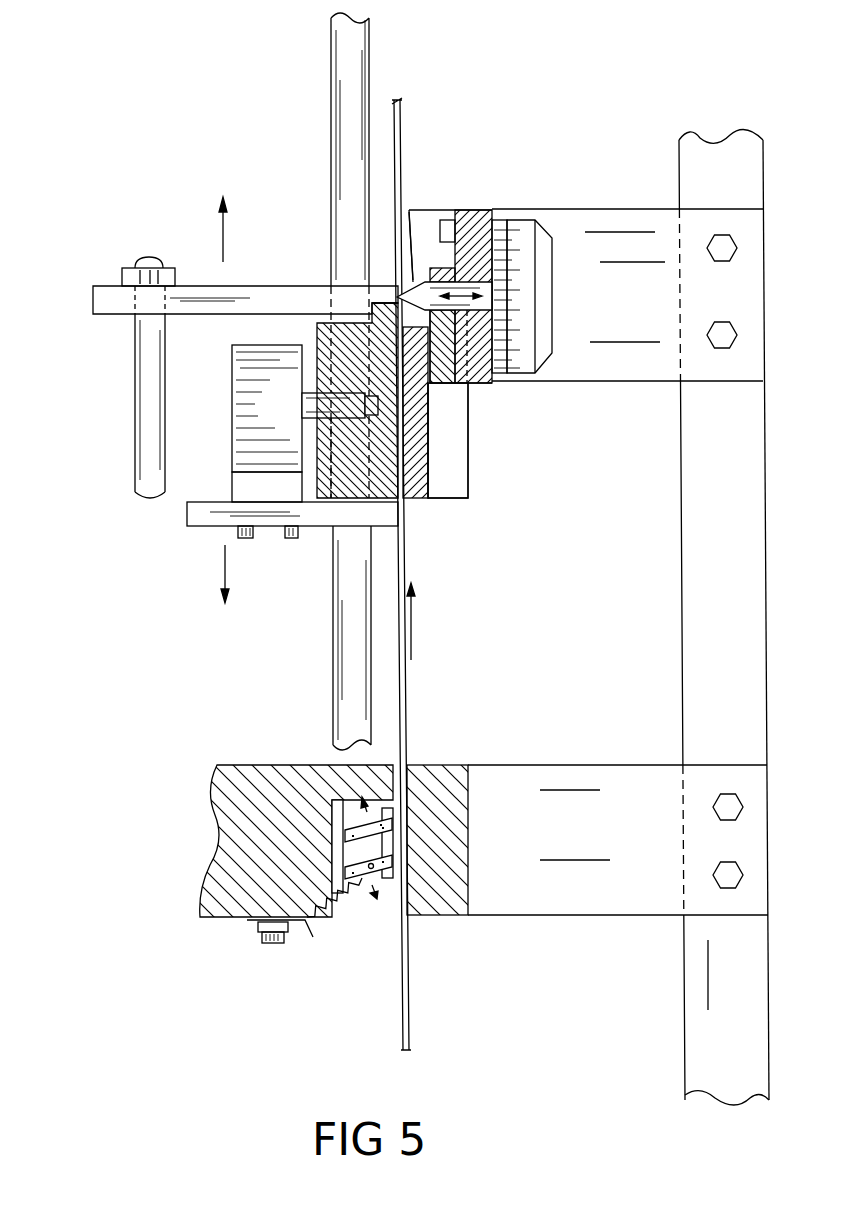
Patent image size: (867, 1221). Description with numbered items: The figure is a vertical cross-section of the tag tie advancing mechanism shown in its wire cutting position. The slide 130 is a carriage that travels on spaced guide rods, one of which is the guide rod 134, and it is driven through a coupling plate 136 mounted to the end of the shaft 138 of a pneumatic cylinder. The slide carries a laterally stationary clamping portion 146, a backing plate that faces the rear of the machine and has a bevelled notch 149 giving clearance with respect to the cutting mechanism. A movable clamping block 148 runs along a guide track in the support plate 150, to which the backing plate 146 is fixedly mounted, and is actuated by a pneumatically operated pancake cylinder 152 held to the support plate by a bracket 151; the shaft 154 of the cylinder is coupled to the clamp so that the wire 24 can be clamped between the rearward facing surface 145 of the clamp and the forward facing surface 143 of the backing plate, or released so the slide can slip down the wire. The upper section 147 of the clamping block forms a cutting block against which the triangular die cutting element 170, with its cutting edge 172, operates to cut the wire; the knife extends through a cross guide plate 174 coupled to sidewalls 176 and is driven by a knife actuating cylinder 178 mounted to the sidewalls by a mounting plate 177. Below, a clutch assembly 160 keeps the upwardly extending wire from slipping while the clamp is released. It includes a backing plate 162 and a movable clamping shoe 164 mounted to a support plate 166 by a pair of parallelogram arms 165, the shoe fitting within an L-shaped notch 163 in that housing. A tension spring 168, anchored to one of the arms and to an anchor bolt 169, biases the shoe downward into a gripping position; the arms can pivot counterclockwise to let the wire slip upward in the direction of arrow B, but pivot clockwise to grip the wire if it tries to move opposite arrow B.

The wire 24 is at (404, 700).
The arrow B is at (414, 628).
The slide 130 is at (170, 525).
The guide rod 134 is at (331, 98).
The coupling plate 136 is at (190, 284).
The shaft 138 is at (135, 358).
The forward facing surface 143 is at (406, 463).
The rearward facing surface 145 is at (396, 366).
The clamping portion 146 is at (468, 488).
The upper section 147 is at (378, 296).
The clamping block 148 is at (326, 490).
The bevelled notch 149 is at (455, 433).
The support plate 150 is at (213, 527).
The bracket 151 is at (236, 483).
The pancake cylinder 152 is at (232, 372).
The shaft 154 is at (302, 401).
The clutch assembly 160 is at (239, 744).
The backing plate 162 is at (467, 823).
The L-shaped notch 163 is at (383, 797).
The clamping shoe 164 is at (395, 843).
The parallelogram arms 165 is at (332, 842).
The support plate 166 is at (218, 866).
The tension spring 168 is at (365, 878).
The anchor bolt 169 is at (268, 943).
The die cutting element 170 is at (411, 272).
The cutting edge 172 is at (398, 296).
The cross guide plate 174 is at (440, 385).
The sidewalls 176 is at (445, 208).
The mounting plate 177 is at (472, 209).
The knife actuating cylinder 178 is at (549, 310).